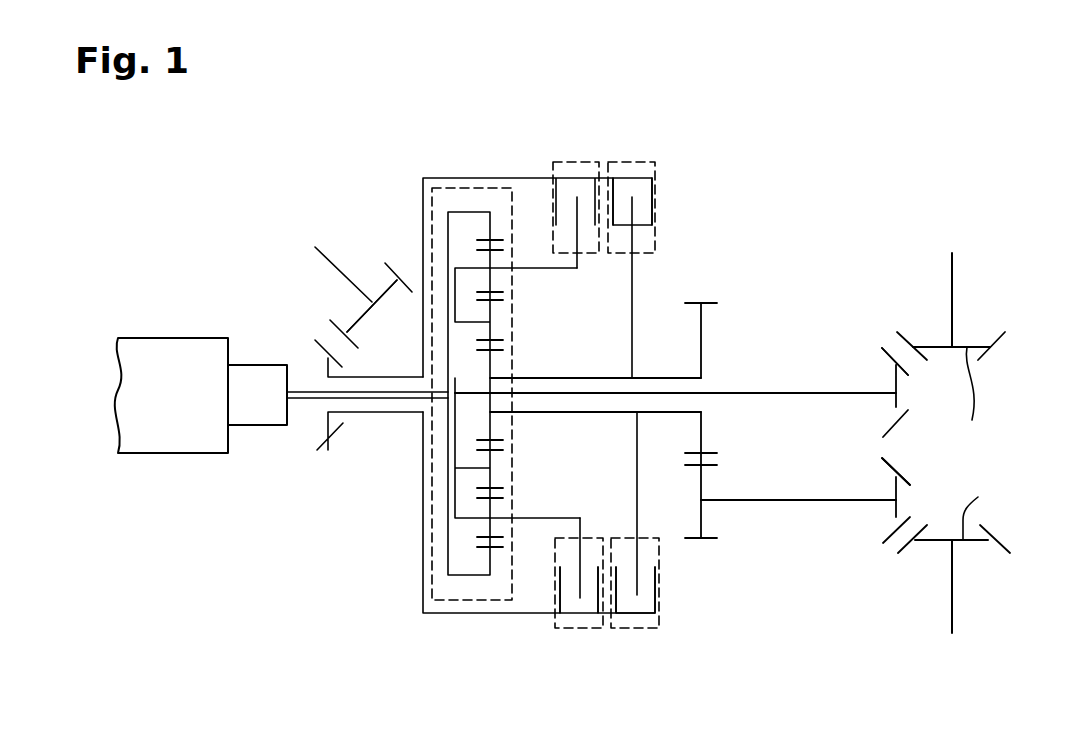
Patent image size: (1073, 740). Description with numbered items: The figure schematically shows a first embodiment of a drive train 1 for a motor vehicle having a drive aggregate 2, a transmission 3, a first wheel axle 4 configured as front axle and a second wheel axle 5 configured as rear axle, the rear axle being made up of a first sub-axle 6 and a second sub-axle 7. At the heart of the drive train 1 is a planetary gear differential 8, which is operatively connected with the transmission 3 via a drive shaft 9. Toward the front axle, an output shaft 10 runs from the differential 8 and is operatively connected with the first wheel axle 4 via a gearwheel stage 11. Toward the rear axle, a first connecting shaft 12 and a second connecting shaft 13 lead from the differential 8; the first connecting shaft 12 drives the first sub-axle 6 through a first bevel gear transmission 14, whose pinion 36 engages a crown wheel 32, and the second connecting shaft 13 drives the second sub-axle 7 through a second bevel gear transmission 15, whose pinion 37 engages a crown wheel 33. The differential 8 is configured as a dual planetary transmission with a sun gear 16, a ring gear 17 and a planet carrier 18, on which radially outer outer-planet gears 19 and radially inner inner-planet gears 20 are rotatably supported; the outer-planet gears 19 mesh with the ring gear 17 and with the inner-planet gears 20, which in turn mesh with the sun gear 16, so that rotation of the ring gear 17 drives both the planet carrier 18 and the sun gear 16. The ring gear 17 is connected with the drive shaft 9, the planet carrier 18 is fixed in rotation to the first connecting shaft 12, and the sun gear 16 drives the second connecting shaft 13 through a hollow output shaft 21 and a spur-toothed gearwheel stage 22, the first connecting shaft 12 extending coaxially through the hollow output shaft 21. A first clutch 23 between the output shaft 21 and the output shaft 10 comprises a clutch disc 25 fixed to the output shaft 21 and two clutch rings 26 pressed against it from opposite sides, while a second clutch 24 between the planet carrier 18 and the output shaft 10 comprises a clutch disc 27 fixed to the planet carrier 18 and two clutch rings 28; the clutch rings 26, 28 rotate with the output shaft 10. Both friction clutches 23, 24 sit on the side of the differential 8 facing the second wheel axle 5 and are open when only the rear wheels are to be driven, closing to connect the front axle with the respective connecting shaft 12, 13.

The drive train 1 is at (640, 647).
The drive aggregate 2 is at (177, 442).
The transmission 3 is at (263, 425).
The first wheel axle 4 is at (336, 245).
The second wheel axle 5 is at (908, 202).
The first sub-axle 6 is at (952, 285).
The second sub-axle 7 is at (952, 605).
The planetary gear differential 8 is at (487, 611).
The drive shaft 9 is at (298, 420).
The output shaft 10 is at (388, 420).
The gearwheel stage 11 is at (303, 328).
The first connecting shaft 12 is at (777, 392).
The second connecting shaft 13 is at (778, 500).
The first bevel gear transmission 14 is at (882, 330).
The second bevel gear transmission 15 is at (873, 570).
The sun gear 16 is at (490, 363).
The ring gear 17 is at (461, 211).
The planet carrier 18 is at (450, 565).
The outer-planet gears 19 is at (490, 278).
The inner-planet gears 20 is at (490, 322).
The output shaft 21 is at (663, 412).
The gearwheel stage 22 is at (728, 525).
The first clutch 23 is at (685, 172).
The second clutch 24 is at (573, 142).
The clutch disc 25 is at (632, 280).
The clutch rings 26 is at (652, 198).
The clutch disc 27 is at (582, 568).
The clutch rings 28 is at (560, 597).
The crown wheel 32 is at (975, 398).
The crown wheel 33 is at (978, 497).
The pinion 36 is at (893, 372).
The pinion 37 is at (893, 487).